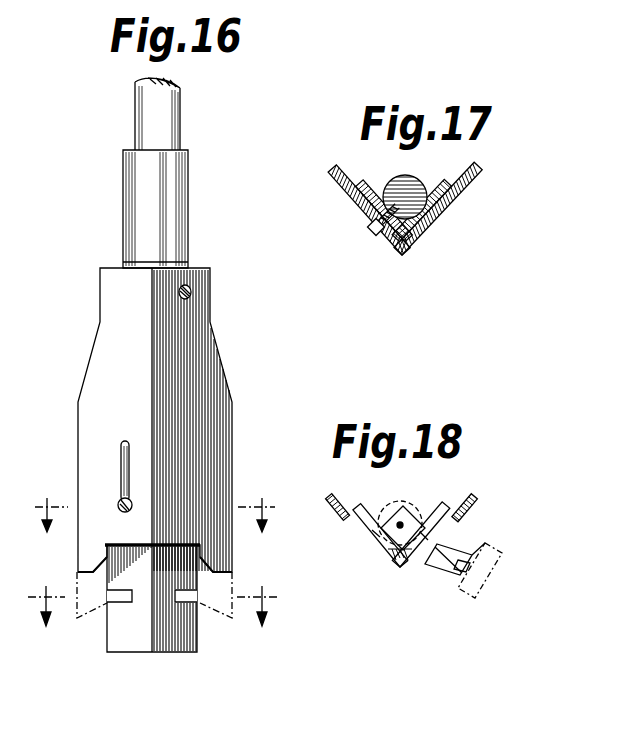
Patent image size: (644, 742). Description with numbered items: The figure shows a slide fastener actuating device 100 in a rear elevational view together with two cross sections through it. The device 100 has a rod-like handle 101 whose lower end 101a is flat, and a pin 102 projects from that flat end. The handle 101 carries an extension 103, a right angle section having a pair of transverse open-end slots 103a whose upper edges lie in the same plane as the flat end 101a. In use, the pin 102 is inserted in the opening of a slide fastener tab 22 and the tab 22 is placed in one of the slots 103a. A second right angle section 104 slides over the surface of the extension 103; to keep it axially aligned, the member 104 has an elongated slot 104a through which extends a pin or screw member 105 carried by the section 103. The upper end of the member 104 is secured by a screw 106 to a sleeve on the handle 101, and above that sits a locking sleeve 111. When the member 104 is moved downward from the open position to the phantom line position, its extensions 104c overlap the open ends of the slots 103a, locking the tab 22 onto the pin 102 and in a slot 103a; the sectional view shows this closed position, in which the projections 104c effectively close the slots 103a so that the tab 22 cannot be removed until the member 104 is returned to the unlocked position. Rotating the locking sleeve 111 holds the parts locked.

In FIG. 16, the slide fastener actuating device 100 is at (247, 185).
In FIG. 16, the rod-like handle 101 is at (172, 120).
In FIG. 17, the rod-like handle 101 is at (420, 184).
In FIG. 18, the rod-like handle 101 is at (390, 510).
In FIG. 18, the lower end of handle 101a is at (390, 500).
In FIG. 18, the pin 102 is at (405, 522).
In FIG. 16, the extension 103 is at (136, 647).
In FIG. 17, the extension 103 is at (366, 190).
In FIG. 18, the extension 103 is at (399, 568).
In FIG. 16, the slots 103a is at (120, 602).
In FIG. 18, the slots 103a is at (374, 538).
In FIG. 16, the second right angle section 104 is at (212, 342).
In FIG. 17, the second right angle section 104 is at (343, 186).
In FIG. 18, the second right angle section 104 is at (424, 494).
In FIG. 16, the elongated slot 104a is at (122, 458).
In FIG. 16, the extensions 104c is at (83, 557).
In FIG. 18, the extensions 104c is at (342, 489).
In FIG. 16, the pin or screw member 105 is at (118, 505).
In FIG. 17, the pin or screw member 105 is at (374, 238).
In FIG. 16, the screw 106 is at (190, 292).
In FIG. 16, the locking sleeve 111 is at (190, 232).
In FIG. 18, the slide fastener tab 22 is at (462, 547).